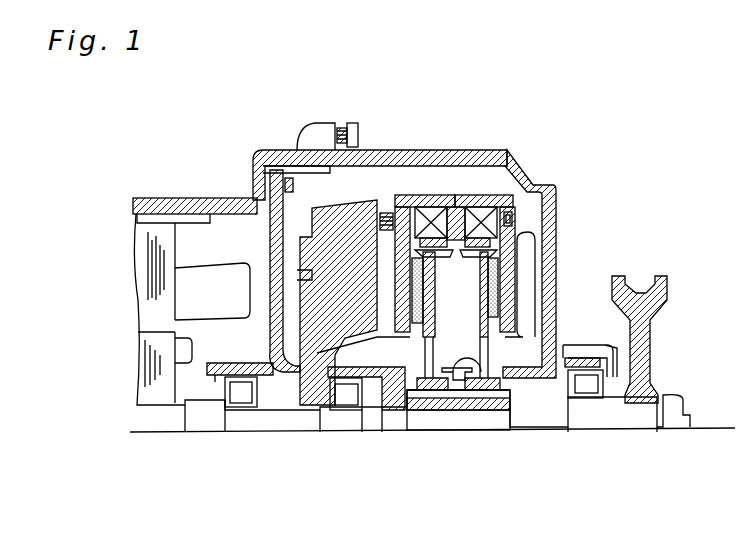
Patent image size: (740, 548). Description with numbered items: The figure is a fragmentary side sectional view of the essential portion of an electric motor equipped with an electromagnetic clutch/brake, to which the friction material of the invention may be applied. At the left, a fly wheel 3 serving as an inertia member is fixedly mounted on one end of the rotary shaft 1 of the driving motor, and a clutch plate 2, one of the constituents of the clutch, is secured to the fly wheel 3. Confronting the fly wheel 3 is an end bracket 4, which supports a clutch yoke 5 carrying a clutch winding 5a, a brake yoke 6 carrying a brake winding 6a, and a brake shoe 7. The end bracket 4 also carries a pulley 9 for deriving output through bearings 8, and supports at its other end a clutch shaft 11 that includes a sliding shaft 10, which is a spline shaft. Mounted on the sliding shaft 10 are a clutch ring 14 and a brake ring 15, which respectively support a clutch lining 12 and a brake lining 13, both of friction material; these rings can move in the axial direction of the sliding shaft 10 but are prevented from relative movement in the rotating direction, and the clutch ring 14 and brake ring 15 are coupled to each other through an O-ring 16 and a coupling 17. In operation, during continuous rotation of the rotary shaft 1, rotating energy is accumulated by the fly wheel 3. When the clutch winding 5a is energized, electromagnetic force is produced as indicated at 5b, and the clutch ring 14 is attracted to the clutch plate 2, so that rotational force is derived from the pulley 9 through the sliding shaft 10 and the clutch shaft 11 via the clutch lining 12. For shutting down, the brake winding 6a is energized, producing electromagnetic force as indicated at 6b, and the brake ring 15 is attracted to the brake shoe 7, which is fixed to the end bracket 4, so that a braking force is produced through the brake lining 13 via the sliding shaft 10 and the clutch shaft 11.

The rotary shaft 1 is at (268, 432).
The clutch plate 2 is at (403, 303).
The fly wheel 3 is at (292, 142).
The end bracket 4 is at (557, 183).
The clutch yoke 5 is at (413, 205).
The clutch winding 5a is at (436, 215).
The electromagnetic force of the clutch 5b is at (443, 197).
The brake yoke 6 is at (478, 195).
The brake winding 6a is at (482, 212).
The electromagnetic force of the brake 6b is at (510, 216).
The brake shoe 7 is at (535, 232).
The bearings 8 is at (345, 397).
The pulley 9 is at (640, 385).
The sliding shaft 10 is at (420, 395).
The clutch shaft 11 is at (500, 417).
The clutch lining 12 is at (343, 223).
The brake lining 13 is at (497, 282).
The clutch ring 14 is at (405, 305).
The brake ring 15 is at (505, 245).
The O-ring 16 is at (438, 387).
The coupling 17 is at (468, 390).